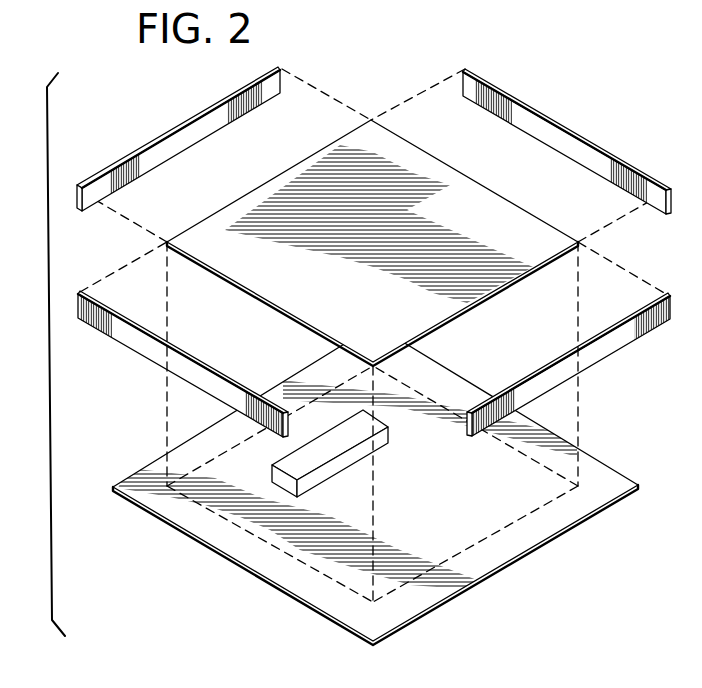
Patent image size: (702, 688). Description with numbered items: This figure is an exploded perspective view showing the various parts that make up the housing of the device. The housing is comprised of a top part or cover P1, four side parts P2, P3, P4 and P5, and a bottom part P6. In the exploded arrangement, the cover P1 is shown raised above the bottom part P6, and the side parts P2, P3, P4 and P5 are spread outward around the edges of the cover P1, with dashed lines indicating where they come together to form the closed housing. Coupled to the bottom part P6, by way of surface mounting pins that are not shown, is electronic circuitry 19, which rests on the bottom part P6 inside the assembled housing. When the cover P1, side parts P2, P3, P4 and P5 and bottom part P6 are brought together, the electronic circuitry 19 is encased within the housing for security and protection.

The top part or cover P1 is at (295, 290).
The side part P2 is at (557, 118).
The side part P3 is at (584, 364).
The side part P4 is at (160, 357).
The side part P5 is at (197, 113).
The bottom part P6 is at (475, 532).
The electronic circuitry 19 is at (347, 460).